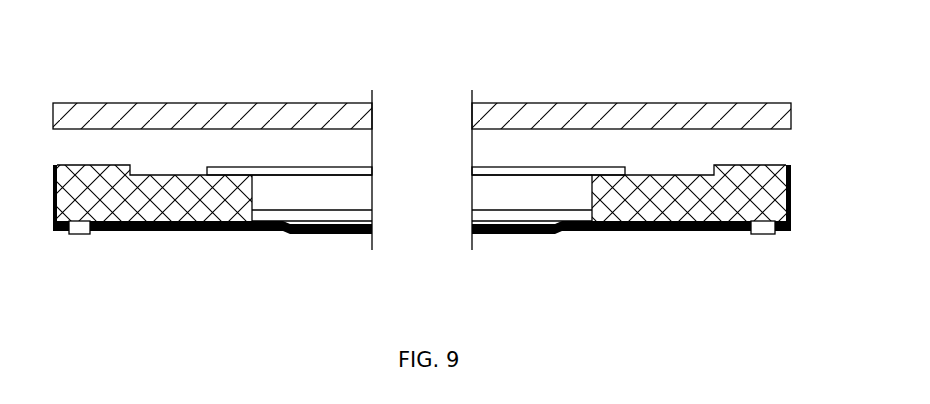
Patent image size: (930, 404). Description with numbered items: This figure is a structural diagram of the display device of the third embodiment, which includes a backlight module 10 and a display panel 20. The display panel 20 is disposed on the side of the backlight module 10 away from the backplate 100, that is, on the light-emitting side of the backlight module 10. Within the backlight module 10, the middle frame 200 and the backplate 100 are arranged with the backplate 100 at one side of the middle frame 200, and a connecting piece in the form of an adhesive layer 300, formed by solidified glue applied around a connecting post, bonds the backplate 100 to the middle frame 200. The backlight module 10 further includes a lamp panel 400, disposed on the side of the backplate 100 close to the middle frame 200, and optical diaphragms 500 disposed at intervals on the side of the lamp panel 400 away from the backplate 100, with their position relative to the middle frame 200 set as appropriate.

The backlight module 10 is at (633, 227).
The display panel 20 is at (652, 108).
The backplate 100 is at (345, 228).
The middle frame 200 is at (160, 203).
The adhesive layer 300 is at (237, 203).
The lamp panel 400 is at (305, 215).
The optical diaphragms 500 is at (573, 178).